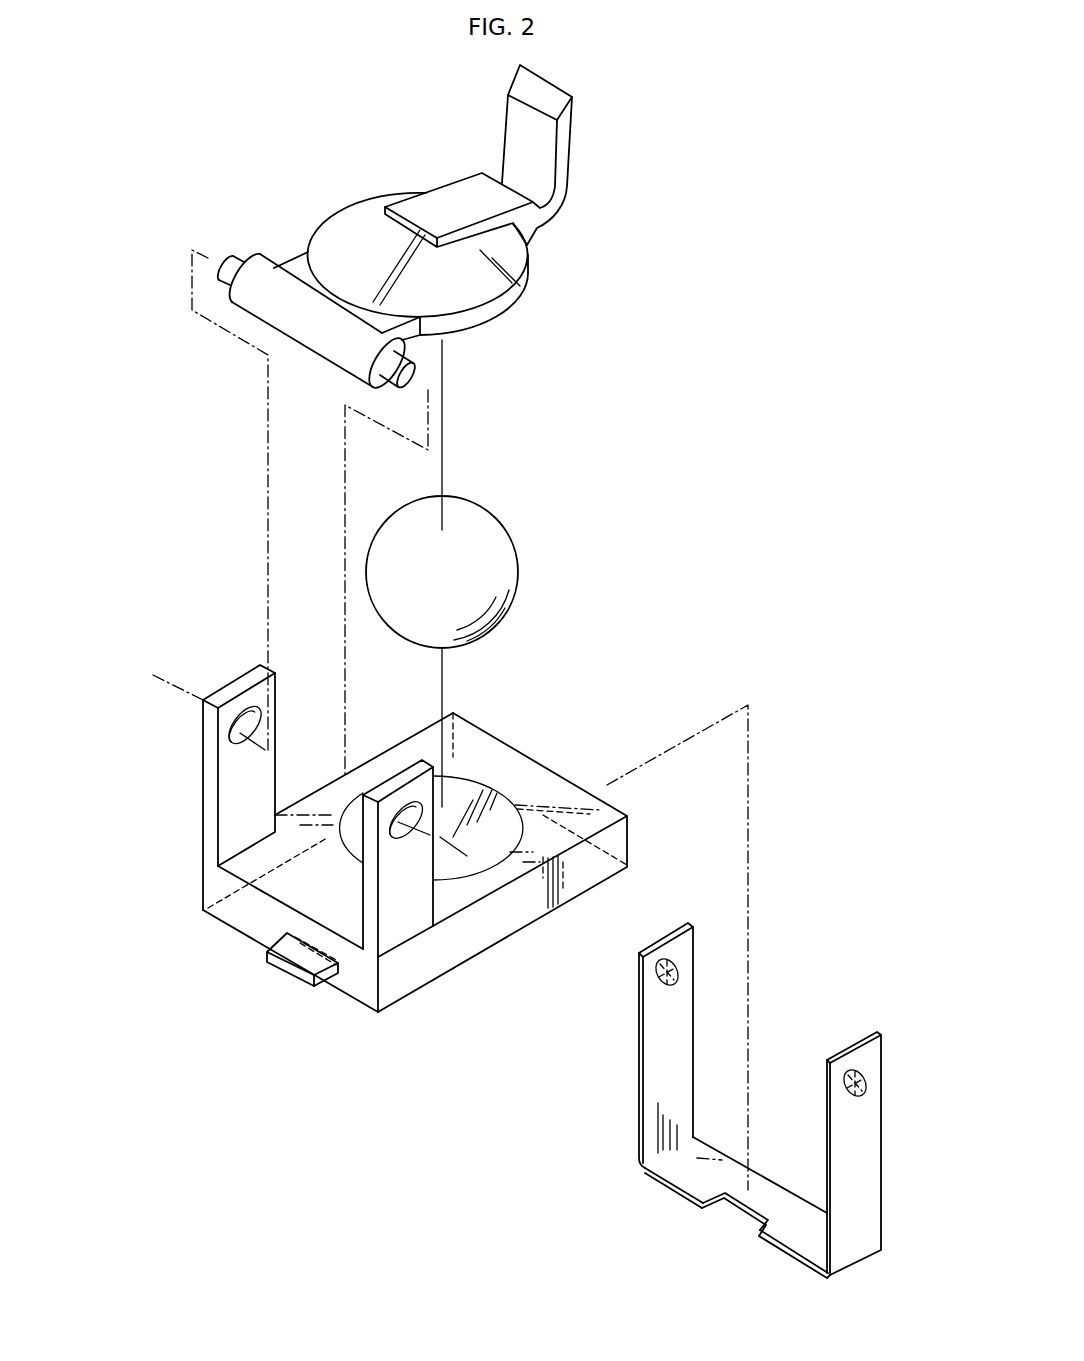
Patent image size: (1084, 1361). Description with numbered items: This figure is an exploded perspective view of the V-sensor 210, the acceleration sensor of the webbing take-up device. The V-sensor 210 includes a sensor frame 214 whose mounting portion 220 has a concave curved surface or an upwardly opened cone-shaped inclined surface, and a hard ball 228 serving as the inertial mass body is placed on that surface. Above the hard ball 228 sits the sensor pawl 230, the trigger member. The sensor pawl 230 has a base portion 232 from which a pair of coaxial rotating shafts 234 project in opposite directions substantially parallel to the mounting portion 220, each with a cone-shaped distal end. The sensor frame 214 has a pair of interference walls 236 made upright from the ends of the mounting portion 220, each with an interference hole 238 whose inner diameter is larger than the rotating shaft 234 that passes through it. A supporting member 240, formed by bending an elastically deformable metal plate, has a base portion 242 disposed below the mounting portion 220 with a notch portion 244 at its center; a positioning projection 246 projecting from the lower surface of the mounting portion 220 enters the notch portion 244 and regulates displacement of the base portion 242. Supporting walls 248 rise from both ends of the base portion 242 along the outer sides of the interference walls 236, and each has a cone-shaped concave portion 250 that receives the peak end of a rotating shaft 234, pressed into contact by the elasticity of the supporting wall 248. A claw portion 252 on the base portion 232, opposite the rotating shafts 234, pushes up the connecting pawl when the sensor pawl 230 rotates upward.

The V-sensor 210 is at (832, 168).
The sensor frame 214 is at (601, 680).
The mounting portion 220 is at (545, 778).
The hard ball 228 is at (498, 527).
The sensor pawl 230 is at (628, 297).
The base portion 232 is at (348, 283).
The rotating shafts 234 is at (238, 258).
The interference walls 236 is at (230, 812).
The interference hole 238 is at (240, 745).
The supporting member 240 is at (514, 1166).
The base portion 242 is at (672, 1172).
The notch portion 244 is at (732, 1205).
The positioning projection 246 is at (340, 980).
The supporting walls 248 is at (650, 1077).
The concave portion 250 is at (667, 986).
The claw portion 252 is at (553, 137).